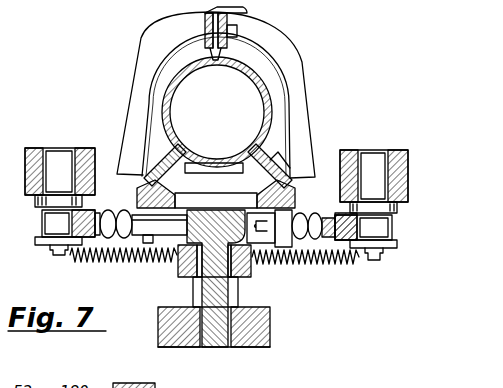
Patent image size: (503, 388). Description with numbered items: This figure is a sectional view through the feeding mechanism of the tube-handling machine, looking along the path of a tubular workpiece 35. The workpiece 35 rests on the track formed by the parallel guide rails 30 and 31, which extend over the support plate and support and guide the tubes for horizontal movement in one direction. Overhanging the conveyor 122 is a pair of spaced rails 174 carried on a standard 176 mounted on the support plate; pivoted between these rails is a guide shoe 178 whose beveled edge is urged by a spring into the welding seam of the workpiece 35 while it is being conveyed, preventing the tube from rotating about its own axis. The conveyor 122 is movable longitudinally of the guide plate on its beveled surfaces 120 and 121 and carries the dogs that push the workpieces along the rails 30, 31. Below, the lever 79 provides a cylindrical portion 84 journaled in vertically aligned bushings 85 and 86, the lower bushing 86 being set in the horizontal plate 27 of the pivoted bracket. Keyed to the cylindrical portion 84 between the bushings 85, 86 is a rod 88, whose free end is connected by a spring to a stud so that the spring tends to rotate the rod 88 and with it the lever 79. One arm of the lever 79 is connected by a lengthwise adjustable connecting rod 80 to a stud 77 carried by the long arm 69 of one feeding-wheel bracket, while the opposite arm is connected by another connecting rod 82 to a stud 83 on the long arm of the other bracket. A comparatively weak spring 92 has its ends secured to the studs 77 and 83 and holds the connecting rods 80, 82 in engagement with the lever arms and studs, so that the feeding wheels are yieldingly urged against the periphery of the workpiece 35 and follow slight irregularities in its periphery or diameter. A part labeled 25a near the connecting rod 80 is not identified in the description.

The standard 176 is at (143, 38).
The guide shoe 178 is at (222, 53).
The spaced rails 174 is at (247, 9).
The tubular workpiece 35 is at (264, 119).
The guide rail 30 is at (140, 176).
The guide rail 31 is at (252, 152).
The beveled surface 120 is at (148, 185).
The beveled surface 121 is at (292, 168).
The conveyor 122 is at (277, 152).
The cylindrical portion 84 is at (214, 337).
The rod 88 is at (193, 290).
The bushing 85 is at (243, 268).
The bushing 86 is at (188, 326).
The horizontal plate 27 is at (272, 347).
The connecting rod 82 is at (165, 226).
The spring 92 is at (97, 259).
The stud 83 is at (58, 156).
The stud 77 is at (372, 160).
The long arm 69 is at (408, 192).
The right rod 25a is at (256, 257).
The connecting rod 80 is at (345, 247).
The lever 79 is at (252, 258).